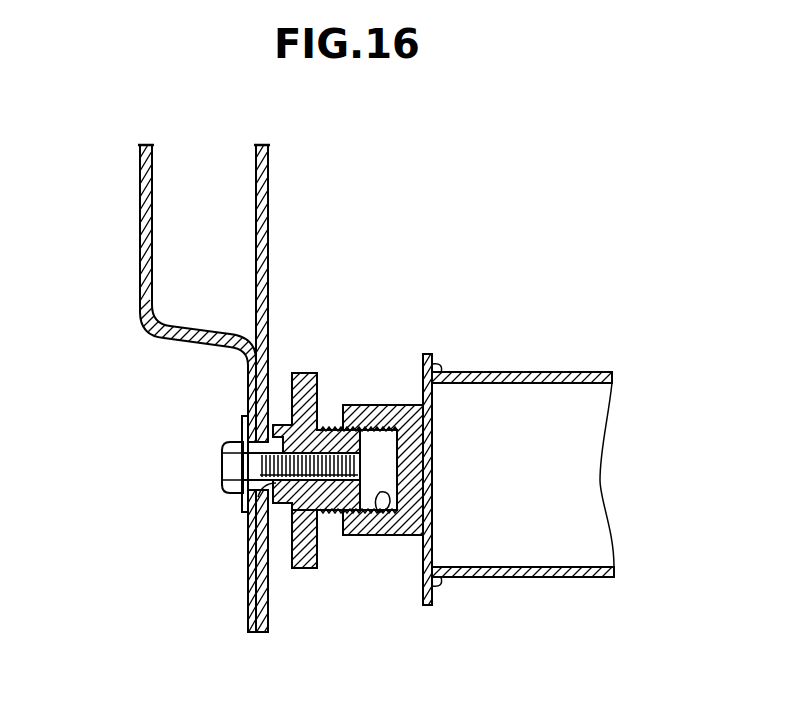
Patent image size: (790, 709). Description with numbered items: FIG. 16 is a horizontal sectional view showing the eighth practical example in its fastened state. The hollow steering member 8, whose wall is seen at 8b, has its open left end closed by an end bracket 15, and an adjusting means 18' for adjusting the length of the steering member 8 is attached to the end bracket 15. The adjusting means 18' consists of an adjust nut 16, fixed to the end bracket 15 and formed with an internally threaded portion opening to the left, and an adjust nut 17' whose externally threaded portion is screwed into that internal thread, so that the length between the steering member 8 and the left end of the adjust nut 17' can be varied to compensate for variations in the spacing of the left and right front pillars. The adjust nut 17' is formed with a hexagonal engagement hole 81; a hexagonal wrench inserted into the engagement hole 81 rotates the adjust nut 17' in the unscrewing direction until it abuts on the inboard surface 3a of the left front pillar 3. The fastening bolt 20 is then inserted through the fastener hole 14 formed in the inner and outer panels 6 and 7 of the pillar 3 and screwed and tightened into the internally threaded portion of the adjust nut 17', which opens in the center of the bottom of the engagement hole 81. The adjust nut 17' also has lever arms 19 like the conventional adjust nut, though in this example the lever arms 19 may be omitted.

The front pillar 3 is at (162, 125).
The outer panel 7 is at (152, 202).
The inner panel 6 is at (255, 212).
The inboard surface 3a is at (268, 246).
The adjusting means 18' is at (290, 438).
The adjust nut 17' is at (277, 463).
The adjust nut 16 is at (362, 405).
The end bracket 15 is at (423, 373).
The fastener hole 14 is at (248, 430).
The fastening bolt 20 is at (210, 463).
The engagement hole 81 is at (268, 487).
The lever arms 19 is at (304, 570).
The steering member 8 is at (620, 489).
The cylinder wall 8b is at (515, 578).